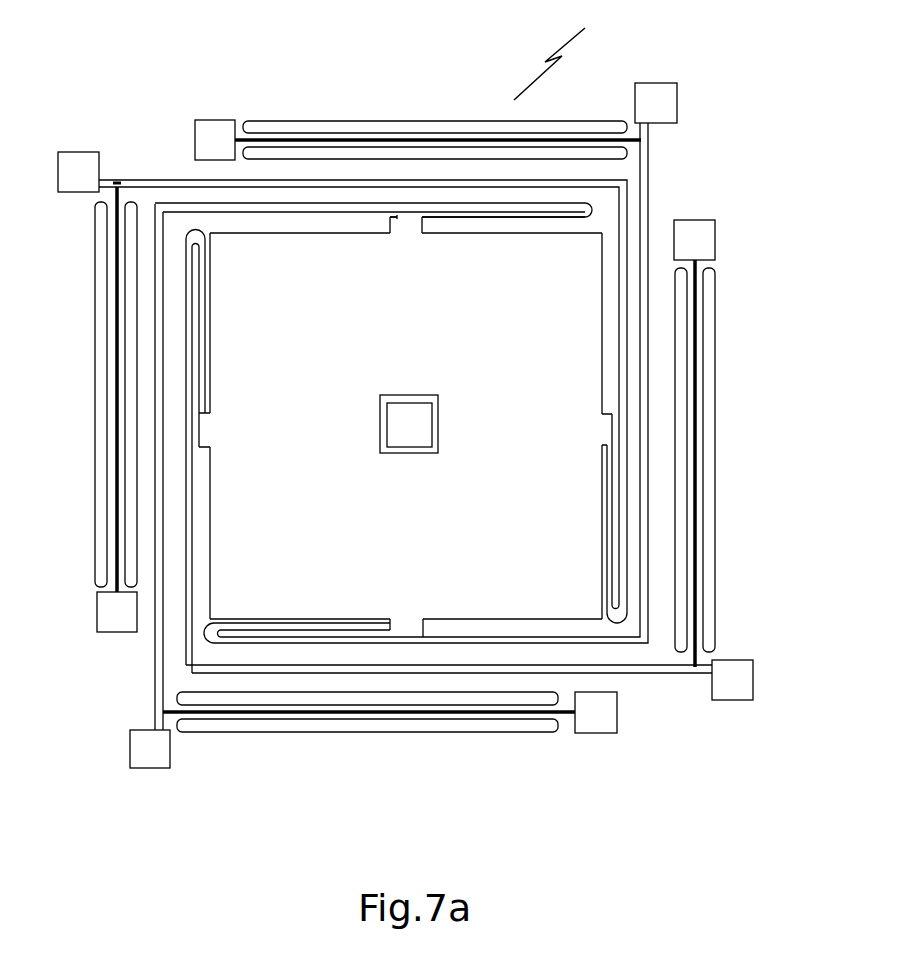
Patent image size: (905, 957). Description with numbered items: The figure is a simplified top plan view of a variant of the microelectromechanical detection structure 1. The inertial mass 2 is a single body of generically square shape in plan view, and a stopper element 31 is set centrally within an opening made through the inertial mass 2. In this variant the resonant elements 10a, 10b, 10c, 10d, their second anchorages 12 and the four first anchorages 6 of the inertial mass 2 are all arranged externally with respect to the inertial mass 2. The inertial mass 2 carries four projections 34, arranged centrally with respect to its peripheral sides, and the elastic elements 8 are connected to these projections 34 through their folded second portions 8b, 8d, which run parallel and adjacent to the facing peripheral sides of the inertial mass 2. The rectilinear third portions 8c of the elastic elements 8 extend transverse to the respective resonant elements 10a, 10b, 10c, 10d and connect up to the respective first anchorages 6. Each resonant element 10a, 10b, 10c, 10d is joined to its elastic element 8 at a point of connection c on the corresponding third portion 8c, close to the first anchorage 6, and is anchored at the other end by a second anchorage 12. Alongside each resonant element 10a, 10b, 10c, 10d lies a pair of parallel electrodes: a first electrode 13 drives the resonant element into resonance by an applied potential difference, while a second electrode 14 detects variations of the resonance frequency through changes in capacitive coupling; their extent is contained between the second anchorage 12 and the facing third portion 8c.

The microelectromechanical detection structure 1 is at (514, 100).
The inertial mass 2 is at (275, 256).
The first anchorage 6 is at (80, 172).
The elastic element 8 is at (622, 502).
The second portion 8b is at (612, 618).
The third portion 8c is at (440, 180).
The suspension beam (left) 8d is at (198, 339).
The resonant element 10a is at (465, 133).
The resonant element 10b is at (718, 460).
The resonant element 10c is at (258, 713).
The resonant element 10d is at (120, 470).
The second anchorage 12 is at (217, 140).
The first electrode 13 is at (712, 380).
The second electrode 14 is at (685, 330).
The stopper element 31 is at (406, 435).
The projection 34 is at (398, 216).
The point of connection c is at (118, 183).